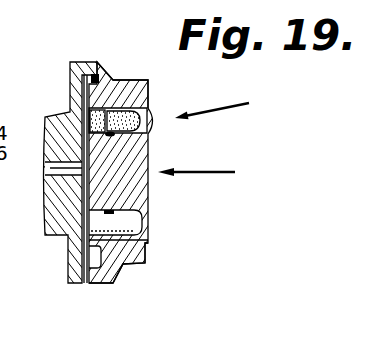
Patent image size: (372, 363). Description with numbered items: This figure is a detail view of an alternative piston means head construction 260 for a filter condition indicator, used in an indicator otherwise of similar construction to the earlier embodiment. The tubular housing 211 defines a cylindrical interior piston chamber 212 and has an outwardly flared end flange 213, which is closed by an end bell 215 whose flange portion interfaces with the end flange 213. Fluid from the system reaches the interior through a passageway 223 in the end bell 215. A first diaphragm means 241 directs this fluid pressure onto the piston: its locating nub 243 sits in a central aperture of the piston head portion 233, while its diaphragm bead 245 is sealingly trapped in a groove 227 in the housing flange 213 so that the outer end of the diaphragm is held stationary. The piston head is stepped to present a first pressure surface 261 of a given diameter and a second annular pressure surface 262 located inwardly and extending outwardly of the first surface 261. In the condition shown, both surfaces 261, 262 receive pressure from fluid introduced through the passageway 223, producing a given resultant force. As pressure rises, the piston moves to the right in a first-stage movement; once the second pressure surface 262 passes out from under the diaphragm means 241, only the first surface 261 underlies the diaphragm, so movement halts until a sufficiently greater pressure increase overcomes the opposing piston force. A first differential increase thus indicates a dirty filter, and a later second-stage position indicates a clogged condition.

The tubular housing 211 is at (150, 248).
The cylindrical interior piston chamber 212 is at (147, 118).
The end flange 213 is at (115, 281).
The end bell 215 is at (55, 115).
The passageway 223 is at (90, 187).
The groove 227 is at (95, 76).
The piston head portion 233 is at (102, 172).
The first diaphragm means 241 is at (97, 200).
The locating nub 243 is at (147, 167).
The diaphragm bead 245 is at (93, 250).
The piston means head construction 260 is at (249, 103).
The first pressure surface 261 is at (88, 202).
The second annular pressure surface 262 is at (148, 110).